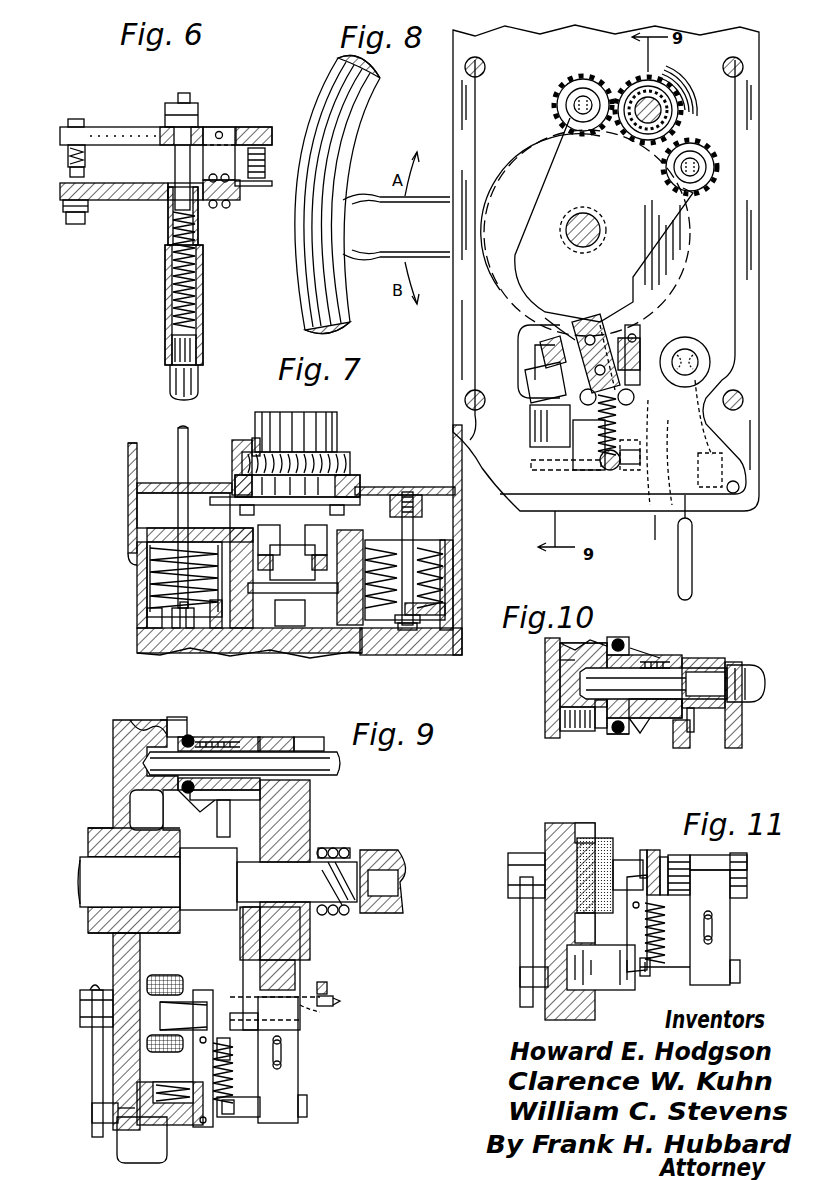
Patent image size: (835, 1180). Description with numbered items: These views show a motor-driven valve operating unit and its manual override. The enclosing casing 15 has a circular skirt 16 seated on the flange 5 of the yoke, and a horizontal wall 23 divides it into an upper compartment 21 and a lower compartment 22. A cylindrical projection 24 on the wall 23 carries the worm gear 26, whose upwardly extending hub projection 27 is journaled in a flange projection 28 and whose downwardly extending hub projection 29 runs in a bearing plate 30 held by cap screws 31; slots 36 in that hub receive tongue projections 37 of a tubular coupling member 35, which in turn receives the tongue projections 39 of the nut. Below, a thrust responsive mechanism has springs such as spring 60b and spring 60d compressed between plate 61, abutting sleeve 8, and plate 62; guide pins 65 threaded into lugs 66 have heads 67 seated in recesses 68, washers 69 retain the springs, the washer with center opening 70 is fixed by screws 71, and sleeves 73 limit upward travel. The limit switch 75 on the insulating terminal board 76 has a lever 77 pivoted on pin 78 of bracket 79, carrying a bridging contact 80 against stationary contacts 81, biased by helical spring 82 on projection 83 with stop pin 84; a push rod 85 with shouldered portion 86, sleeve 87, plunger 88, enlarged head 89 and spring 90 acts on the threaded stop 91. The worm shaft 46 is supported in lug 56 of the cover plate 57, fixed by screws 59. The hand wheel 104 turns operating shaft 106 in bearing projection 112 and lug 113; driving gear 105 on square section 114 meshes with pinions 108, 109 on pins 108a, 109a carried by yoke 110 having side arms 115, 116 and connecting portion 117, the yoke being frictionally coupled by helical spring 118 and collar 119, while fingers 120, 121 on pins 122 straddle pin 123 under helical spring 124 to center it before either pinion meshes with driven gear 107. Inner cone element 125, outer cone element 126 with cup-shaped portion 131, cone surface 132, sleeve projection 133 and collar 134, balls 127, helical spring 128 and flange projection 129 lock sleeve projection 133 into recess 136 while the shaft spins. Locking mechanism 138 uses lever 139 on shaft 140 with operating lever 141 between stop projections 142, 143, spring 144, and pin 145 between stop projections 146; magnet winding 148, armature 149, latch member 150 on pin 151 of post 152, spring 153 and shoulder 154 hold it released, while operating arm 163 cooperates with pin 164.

In FIG. 7, the flange 5 is at (462, 648).
In FIG. 7, the sleeve 8 is at (249, 643).
In FIG. 7, the enclosing casing 15 is at (128, 468).
In FIG. 7, the circular skirt 16 is at (130, 568).
In FIG. 7, the upper compartment 21 is at (128, 449).
In FIG. 7, the lower compartment 22 is at (140, 507).
In FIG. 7, the horizontal wall 23 is at (152, 483).
In FIG. 7, the cylindrical projection 24 is at (232, 446).
In FIG. 7, the worm gear 26 is at (352, 463).
In FIG. 7, the upwardly extending tubular hub projection 27 is at (338, 420).
In FIG. 7, the flange projection 28 is at (252, 440).
In FIG. 7, the downwardly extending tubular hub projection 29 is at (269, 540).
In FIG. 7, the bearing plate 30 is at (225, 505).
In FIG. 7, the cap screws 31 is at (352, 504).
In FIG. 7, the tubular coupling member 35 is at (340, 585).
In FIG. 7, the slots 36 is at (316, 540).
In FIG. 7, the tongue projections 37 is at (296, 578).
In FIG. 7, the tongue projections 39 is at (290, 613).
In FIG. 8, the worm shaft 46 is at (662, 90).
In FIG. 10, the worm shaft 46 is at (765, 686).
In FIG. 9, the worm shaft 46 is at (338, 766).
In FIG. 10, the lug 56 is at (562, 659).
In FIG. 9, the lug 56 is at (125, 732).
In FIG. 8, the cover plate 57 is at (453, 123).
In FIG. 10, the cover plate 57 is at (548, 731).
In FIG. 9, the cover plate 57 is at (113, 801).
In FIG. 11, the cover plate 57 is at (545, 834).
In FIG. 8, the screws 59 is at (465, 67).
In FIG. 7, the spring 60b is at (455, 571).
In FIG. 7, the spring 60d is at (137, 560).
In FIG. 7, the plate 61 is at (147, 621).
In FIG. 7, the plate 62 is at (147, 533).
In FIG. 7, the guide pins 65 is at (415, 519).
In FIG. 7, the lugs 66 is at (422, 506).
In FIG. 7, the head 67 is at (415, 630).
In FIG. 7, the recess 68 is at (405, 630).
In FIG. 7, the washers 69 is at (150, 612).
In FIG. 7, the center opening 70 is at (177, 630).
In FIG. 7, the screws 71 is at (150, 590).
In FIG. 7, the sleeves 73 is at (454, 556).
In FIG. 6, the limit switch 75 is at (120, 125).
In FIG. 6, the insulating terminal board 76 is at (127, 201).
In FIG. 6, the movable insulating lever 77 is at (142, 128).
In FIG. 6, the pin 78 is at (220, 131).
In FIG. 6, the bracket 79 is at (236, 128).
In FIG. 6, the bridging contact 80 is at (70, 172).
In FIG. 6, the stationary contacts 81 is at (62, 183).
In FIG. 6, the helical spring 82 is at (266, 156).
In FIG. 6, the projection 83 is at (243, 186).
In FIG. 6, the stop pin 84 is at (272, 187).
In FIG. 6, the push rod 85 is at (170, 383).
In FIG. 7, the push rod 85 is at (178, 433).
In FIG. 7, the shouldered portion 86 is at (190, 630).
In FIG. 6, the sleeve 87 is at (204, 295).
In FIG. 6, the plunger 88 is at (175, 163).
In FIG. 6, the enlarged head 89 is at (200, 215).
In FIG. 6, the spring 90 is at (172, 262).
In FIG. 6, the threaded stop 91 is at (184, 99).
In FIG. 8, the hand wheel 104 is at (328, 88).
In FIG. 8, the driving gear 105 is at (672, 252).
In FIG. 9, the driving gear 105 is at (312, 822).
In FIG. 8, the operating shaft 106 is at (601, 233).
In FIG. 9, the operating shaft 106 is at (80, 879).
In FIG. 8, the driven gear 107 is at (672, 108).
In FIG. 10, the driven gear 107 is at (708, 710).
In FIG. 9, the driven gear 107 is at (286, 737).
In FIG. 8, the pinion 108 is at (557, 98).
In FIG. 8, the pin 108a is at (574, 106).
In FIG. 8, the pinion 109 is at (700, 158).
In FIG. 8, the pin 109a is at (693, 178).
In FIG. 8, the yoke 110 is at (585, 233).
In FIG. 11, the yoke 110 is at (748, 878).
In FIG. 9, the bearing projection 112 is at (88, 840).
In FIG. 9, the lug 113 is at (404, 866).
In FIG. 8, the square section 114 is at (598, 212).
In FIG. 9, the square section 114 is at (297, 882).
In FIG. 10, the side arm 115 is at (680, 750).
In FIG. 9, the side arm 115 is at (240, 925).
In FIG. 10, the side arm 116 is at (733, 750).
In FIG. 9, the side arm 116 is at (300, 951).
In FIG. 8, the connecting portion 117 is at (606, 318).
In FIG. 11, the connecting portion 117 is at (708, 856).
In FIG. 9, the helical spring 118 is at (335, 848).
In FIG. 9, the collar 119 is at (346, 916).
In FIG. 8, the finger 120 is at (573, 455).
In FIG. 9, the finger 120 is at (290, 1124).
In FIG. 11, the finger 120 is at (730, 951).
In FIG. 8, the finger 121 is at (640, 458).
In FIG. 8, the pins 122 is at (545, 320).
In FIG. 9, the pins 122 is at (305, 1020).
In FIG. 8, the pin 123 is at (610, 470).
In FIG. 9, the pin 123 is at (308, 1107).
In FIG. 11, the pin 123 is at (741, 976).
In FIG. 8, the helical spring 124 is at (618, 426).
In FIG. 9, the helical spring 124 is at (282, 1053).
In FIG. 11, the helical spring 124 is at (713, 928).
In FIG. 10, the inner cone element 125 is at (640, 718).
In FIG. 9, the inner cone element 125 is at (250, 742).
In FIG. 10, the outer cone element 126 is at (635, 643).
In FIG. 9, the outer cone element 126 is at (200, 720).
In FIG. 10, the balls 127 is at (617, 639).
In FIG. 9, the balls 127 is at (188, 735).
In FIG. 10, the helical spring 128 is at (653, 661).
In FIG. 9, the helical spring 128 is at (210, 740).
In FIG. 10, the flange projection 129 is at (606, 727).
In FIG. 10, the cup-shaped portion 131 is at (616, 735).
In FIG. 9, the cup-shaped portion 131 is at (170, 717).
In FIG. 10, the cone surface 132 is at (636, 728).
In FIG. 9, the cone surface 132 is at (185, 812).
In FIG. 10, the sleeve projection 133 is at (668, 658).
In FIG. 10, the collar 134 is at (690, 664).
In FIG. 9, the collar 134 is at (236, 737).
In FIG. 8, the semi-circular recess 136 is at (622, 95).
In FIG. 10, the semi-circular recess 136 is at (692, 734).
In FIG. 9, the semi-circular recess 136 is at (217, 815).
In FIG. 8, the locking mechanism 138 is at (680, 335).
In FIG. 11, the locking mechanism 138 is at (643, 850).
In FIG. 8, the lever 139 is at (535, 404).
In FIG. 11, the lever 139 is at (653, 850).
In FIG. 8, the shaft 140 is at (696, 352).
In FIG. 9, the shaft 140 is at (80, 1009).
In FIG. 11, the shaft 140 is at (508, 877).
In FIG. 8, the manual operating lever 141 is at (693, 580).
In FIG. 9, the manual operating lever 141 is at (92, 1076).
In FIG. 11, the manual operating lever 141 is at (520, 945).
In FIG. 8, the stop projection 142 is at (712, 487).
In FIG. 8, the stop projection 143 is at (648, 512).
In FIG. 9, the stop projection 143 is at (92, 1114).
In FIG. 11, the stop projection 143 is at (520, 978).
In FIG. 8, the spring 144 is at (575, 432).
In FIG. 9, the spring 144 is at (240, 1118).
In FIG. 11, the spring 144 is at (645, 977).
In FIG. 8, the pin 145 is at (600, 320).
In FIG. 9, the pin 145 is at (255, 1020).
In FIG. 11, the pin 145 is at (664, 857).
In FIG. 8, the stop projections 146 is at (545, 366).
In FIG. 9, the stop projections 146 is at (240, 1013).
In FIG. 11, the stop projections 146 is at (675, 895).
In FIG. 8, the magnet winding 148 is at (518, 355).
In FIG. 9, the magnet winding 148 is at (172, 975).
In FIG. 11, the magnet winding 148 is at (590, 838).
In FIG. 9, the armature 149 is at (200, 1002).
In FIG. 11, the armature 149 is at (622, 860).
In FIG. 9, the latch member 150 is at (223, 1043).
In FIG. 11, the latch member 150 is at (658, 935).
In FIG. 9, the pin 151 is at (205, 1128).
In FIG. 9, the post 152 is at (178, 1126).
In FIG. 11, the post 152 is at (606, 990).
In FIG. 9, the spring 153 is at (172, 1085).
In FIG. 9, the shoulder 154 is at (227, 1046).
In FIG. 11, the shoulder 154 is at (637, 877).
In FIG. 9, the operating arm 163 is at (327, 988).
In FIG. 9, the pin 164 is at (340, 1001).